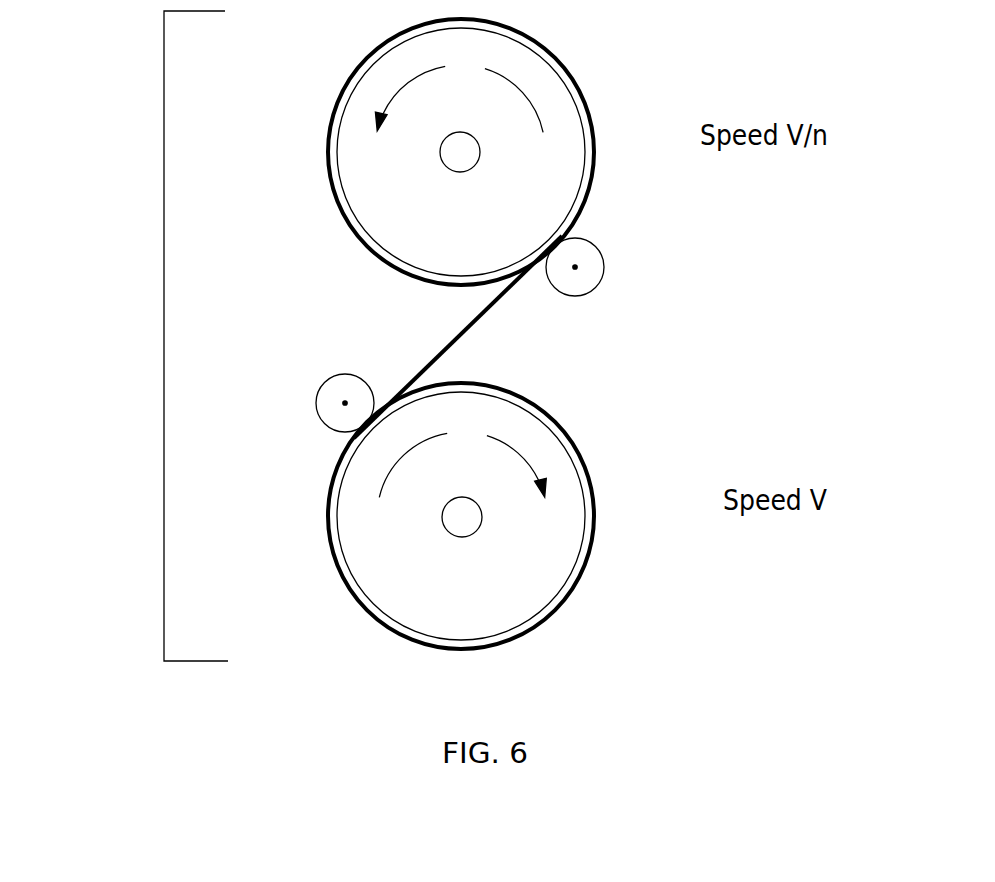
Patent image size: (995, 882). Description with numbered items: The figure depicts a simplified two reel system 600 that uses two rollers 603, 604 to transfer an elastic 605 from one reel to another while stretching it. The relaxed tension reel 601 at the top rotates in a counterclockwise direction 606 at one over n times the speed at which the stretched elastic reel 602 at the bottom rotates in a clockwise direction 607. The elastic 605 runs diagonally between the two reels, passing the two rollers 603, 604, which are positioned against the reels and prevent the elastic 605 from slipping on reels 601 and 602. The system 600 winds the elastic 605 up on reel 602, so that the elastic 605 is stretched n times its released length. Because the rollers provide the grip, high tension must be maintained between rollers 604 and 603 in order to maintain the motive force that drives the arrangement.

The two reel system 600 is at (164, 315).
The relaxed tension reel 601 is at (381, 212).
The stretched elastic reel 602 is at (423, 598).
The roller 603 is at (605, 293).
The roller 604 is at (310, 428).
The elastic 605 is at (456, 336).
The counterclockwise direction 606 is at (459, 95).
The clockwise direction 607 is at (462, 461).